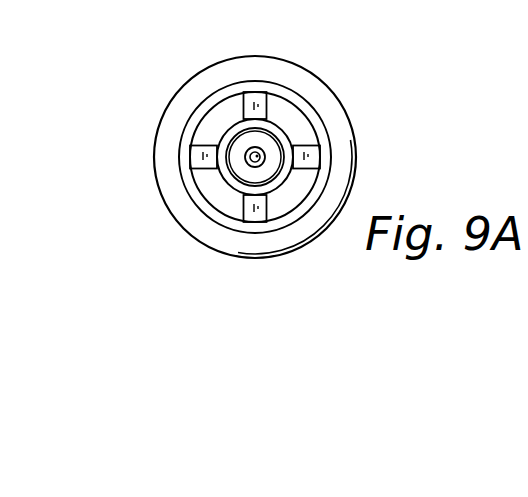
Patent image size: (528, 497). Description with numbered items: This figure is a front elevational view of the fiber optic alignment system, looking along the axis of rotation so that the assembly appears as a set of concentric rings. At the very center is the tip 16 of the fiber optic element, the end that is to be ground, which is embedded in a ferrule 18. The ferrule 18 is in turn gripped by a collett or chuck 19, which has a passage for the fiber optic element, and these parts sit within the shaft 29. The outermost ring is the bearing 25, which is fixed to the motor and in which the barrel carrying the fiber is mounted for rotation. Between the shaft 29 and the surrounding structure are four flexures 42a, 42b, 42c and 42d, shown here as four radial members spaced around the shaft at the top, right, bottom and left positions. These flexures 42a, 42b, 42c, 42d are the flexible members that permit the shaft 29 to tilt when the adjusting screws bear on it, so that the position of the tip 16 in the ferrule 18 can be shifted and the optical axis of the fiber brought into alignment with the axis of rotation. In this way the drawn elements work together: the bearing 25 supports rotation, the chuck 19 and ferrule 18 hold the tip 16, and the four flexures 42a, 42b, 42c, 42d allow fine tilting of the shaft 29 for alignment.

The bearing 25 is at (212, 64).
The shaft 29 is at (283, 128).
The collett or chuck 19 is at (238, 163).
The ferrule 18 is at (248, 152).
The tip 16 is at (250, 161).
The flexure 42a is at (256, 104).
The flexure 42b is at (317, 158).
The flexure 42c is at (254, 212).
The flexure 42d is at (197, 156).